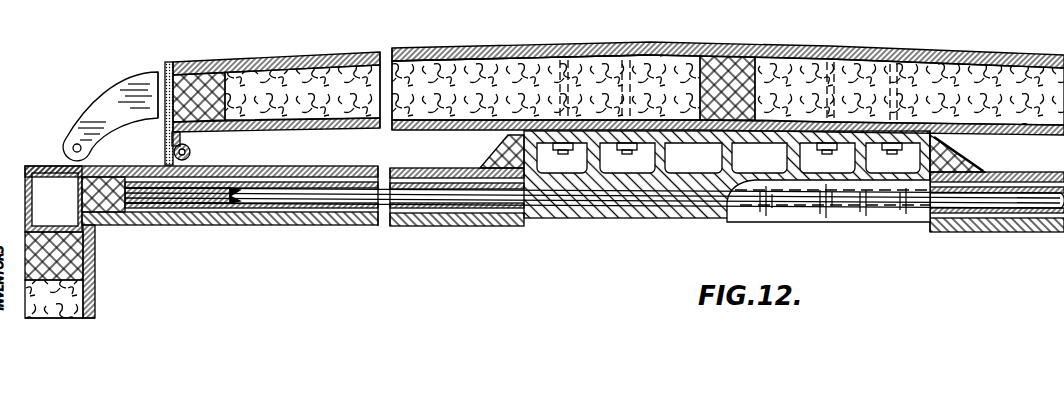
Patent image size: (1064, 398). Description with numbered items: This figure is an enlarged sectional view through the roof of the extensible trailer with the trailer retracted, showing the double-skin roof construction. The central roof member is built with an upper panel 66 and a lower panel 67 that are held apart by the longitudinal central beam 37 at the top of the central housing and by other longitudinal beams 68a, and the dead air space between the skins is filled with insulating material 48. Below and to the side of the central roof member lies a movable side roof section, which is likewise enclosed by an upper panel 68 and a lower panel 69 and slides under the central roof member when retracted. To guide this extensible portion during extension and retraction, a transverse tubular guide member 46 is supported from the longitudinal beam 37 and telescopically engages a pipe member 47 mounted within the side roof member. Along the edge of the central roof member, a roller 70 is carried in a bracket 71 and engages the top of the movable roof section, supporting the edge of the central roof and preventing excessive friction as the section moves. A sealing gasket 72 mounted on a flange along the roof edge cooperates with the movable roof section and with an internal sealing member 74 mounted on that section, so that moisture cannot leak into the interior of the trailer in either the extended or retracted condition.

The longitudinal central beam 37 is at (731, 68).
The transverse tubular guide member 46 is at (491, 205).
The pipe member 47 is at (428, 212).
The insulating material 48 is at (972, 75).
The upper panel 66 is at (558, 54).
The lower panel 67 is at (470, 120).
The upper panel 68 is at (294, 176).
The longitudinal beam 68a is at (207, 72).
The lower panel 69 is at (300, 220).
The roller 70 is at (64, 148).
The bracket 71 is at (110, 82).
The sealing gasket 72 is at (192, 152).
The internal sealing member 74 is at (500, 153).